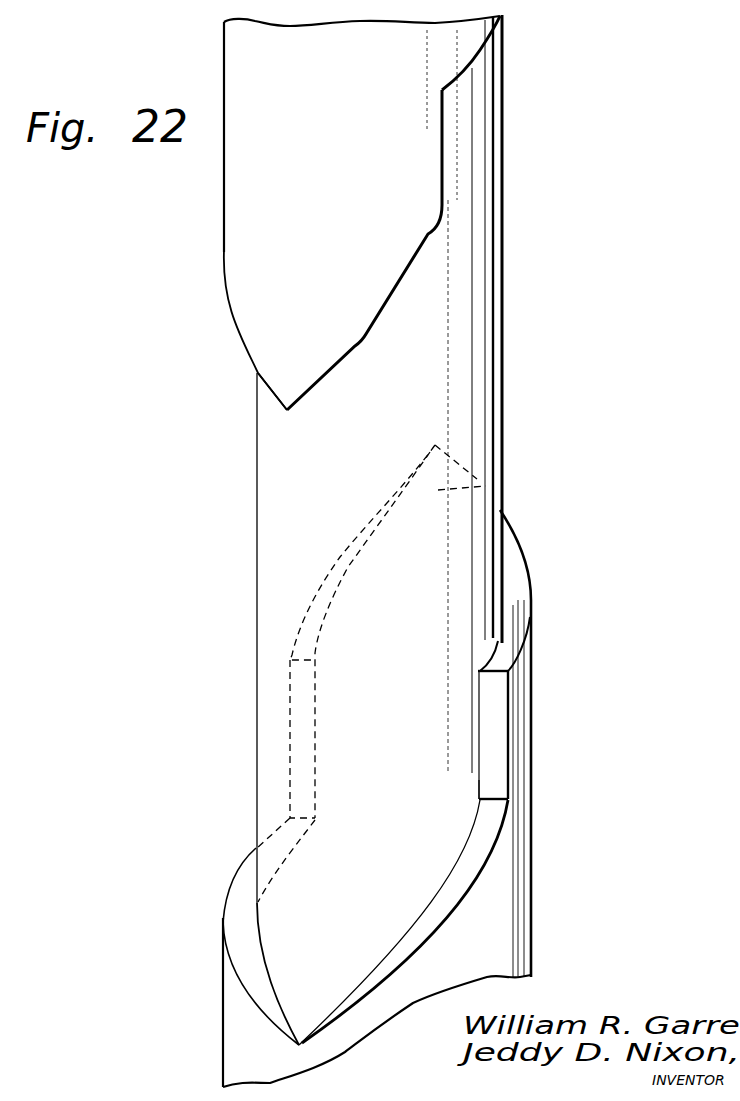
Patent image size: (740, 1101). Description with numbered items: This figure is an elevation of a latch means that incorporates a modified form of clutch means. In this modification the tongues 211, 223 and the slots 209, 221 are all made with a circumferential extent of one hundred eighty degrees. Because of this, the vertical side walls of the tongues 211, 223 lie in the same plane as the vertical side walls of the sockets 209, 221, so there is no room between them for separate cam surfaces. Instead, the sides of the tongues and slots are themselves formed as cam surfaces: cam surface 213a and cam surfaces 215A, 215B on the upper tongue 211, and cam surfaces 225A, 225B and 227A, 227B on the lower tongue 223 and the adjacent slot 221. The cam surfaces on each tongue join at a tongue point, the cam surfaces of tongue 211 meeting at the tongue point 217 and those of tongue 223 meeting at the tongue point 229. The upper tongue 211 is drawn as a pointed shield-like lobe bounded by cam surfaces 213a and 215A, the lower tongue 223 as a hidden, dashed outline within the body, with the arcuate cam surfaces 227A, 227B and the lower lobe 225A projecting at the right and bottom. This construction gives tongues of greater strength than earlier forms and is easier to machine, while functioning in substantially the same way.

The tongue 211 is at (245, 218).
The slot 209 is at (518, 108).
The cam surface 215B is at (470, 67).
The cam surface 215A is at (364, 338).
The cam surface 213a is at (238, 337).
The tongue point 217 is at (282, 388).
The cam surface 225B is at (310, 632).
The tongue point 229 is at (484, 486).
The cam surface 227B is at (517, 615).
The tongue 223 is at (512, 663).
The slot 221 is at (491, 777).
The cam surface 227A is at (470, 875).
The cam surface 225A is at (253, 966).